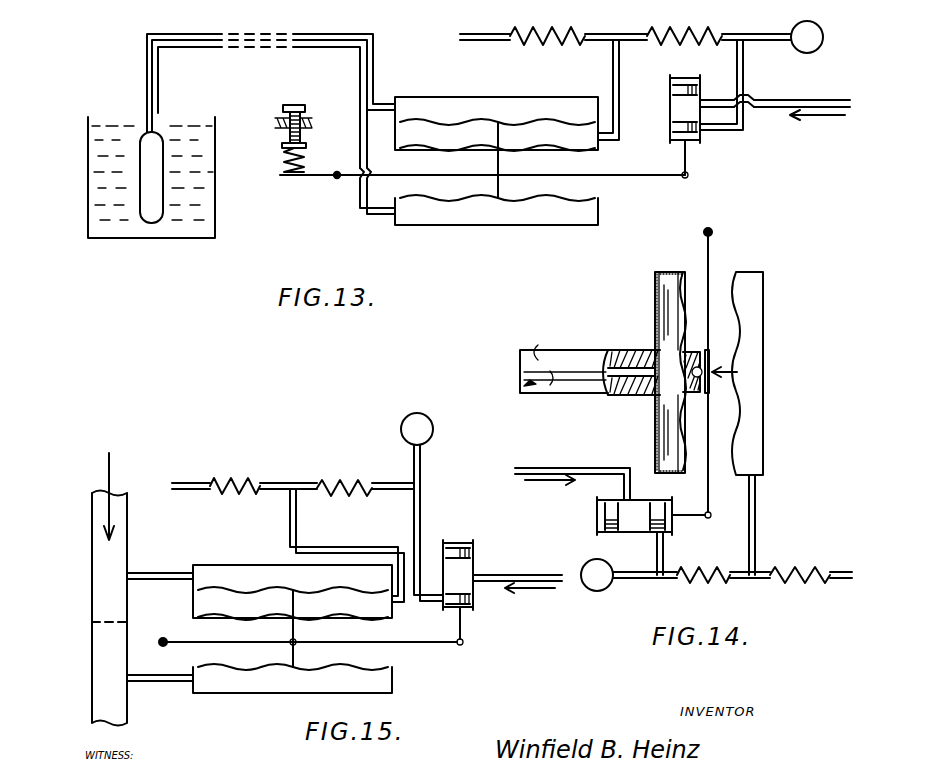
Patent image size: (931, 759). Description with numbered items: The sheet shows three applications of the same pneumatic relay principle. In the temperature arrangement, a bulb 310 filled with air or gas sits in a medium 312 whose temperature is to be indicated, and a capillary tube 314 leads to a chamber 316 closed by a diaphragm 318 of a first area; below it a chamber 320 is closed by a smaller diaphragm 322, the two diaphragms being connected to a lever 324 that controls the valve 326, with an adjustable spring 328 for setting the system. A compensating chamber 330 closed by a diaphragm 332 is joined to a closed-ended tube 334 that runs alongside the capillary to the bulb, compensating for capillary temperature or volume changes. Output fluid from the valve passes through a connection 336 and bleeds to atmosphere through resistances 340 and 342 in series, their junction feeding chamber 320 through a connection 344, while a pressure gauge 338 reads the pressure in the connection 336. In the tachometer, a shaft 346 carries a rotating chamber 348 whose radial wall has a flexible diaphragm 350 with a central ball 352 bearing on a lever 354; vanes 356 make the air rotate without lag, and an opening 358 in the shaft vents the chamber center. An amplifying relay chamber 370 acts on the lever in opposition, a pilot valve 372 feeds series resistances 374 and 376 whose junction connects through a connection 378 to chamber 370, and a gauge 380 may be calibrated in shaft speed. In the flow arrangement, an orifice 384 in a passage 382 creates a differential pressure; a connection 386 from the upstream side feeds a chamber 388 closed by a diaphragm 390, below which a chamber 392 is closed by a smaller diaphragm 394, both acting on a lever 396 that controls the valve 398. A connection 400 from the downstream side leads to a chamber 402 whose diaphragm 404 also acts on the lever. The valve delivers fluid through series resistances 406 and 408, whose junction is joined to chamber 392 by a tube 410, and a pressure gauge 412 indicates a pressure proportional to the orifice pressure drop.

In FIG. 13, the bulb 310 is at (150, 218).
In FIG. 13, the medium 312 is at (215, 181).
In FIG. 13, the capillary tube 314 is at (333, 27).
In FIG. 13, the chamber 316 is at (428, 93).
In FIG. 13, the diaphragm 318 is at (560, 126).
In FIG. 13, the chamber 320 is at (415, 149).
In FIG. 13, the diaphragm 322 is at (543, 149).
In FIG. 13, the lever 324 is at (612, 167).
In FIG. 13, the valve 326 is at (661, 124).
In FIG. 13, the spring 328 is at (282, 158).
In FIG. 13, the compensating chamber 330 is at (412, 228).
In FIG. 13, the diaphragm 332 is at (555, 197).
In FIG. 13, the tube 334 is at (355, 195).
In FIG. 13, the connection 336 is at (744, 68).
In FIG. 13, the pressure gauge 338 is at (812, 21).
In FIG. 13, the resistance 340 is at (680, 27).
In FIG. 13, the resistance 342 is at (548, 27).
In FIG. 13, the connection 344 is at (620, 72).
In FIG. 14, the shaft 346 is at (575, 351).
In FIG. 14, the chamber 348 is at (670, 272).
In FIG. 14, the diaphragm 350 is at (684, 408).
In FIG. 14, the ball 352 is at (697, 362).
In FIG. 14, the lever 354 is at (707, 488).
In FIG. 14, the vanes 356 is at (665, 302).
In FIG. 14, the opening 358 is at (635, 395).
In FIG. 14, the chamber 370 is at (750, 272).
In FIG. 14, the pilot valve 372 is at (588, 520).
In FIG. 14, the resistance 374 is at (706, 556).
In FIG. 14, the resistance 376 is at (795, 567).
In FIG. 14, the connection 378 is at (756, 525).
In FIG. 14, the gauge 380 is at (608, 588).
In FIG. 15, the passage 382 is at (128, 546).
In FIG. 15, the orifice 384 is at (112, 621).
In FIG. 15, the connection 386 is at (145, 579).
In FIG. 15, the chamber 388 is at (214, 572).
In FIG. 15, the diaphragm 390 is at (336, 592).
In FIG. 15, the chamber 392 is at (208, 617).
In FIG. 15, the diaphragm 394 is at (340, 620).
In FIG. 15, the lever 396 is at (413, 641).
In FIG. 15, the valve 398 is at (459, 538).
In FIG. 15, the connection 400 is at (146, 681).
In FIG. 15, the chamber 402 is at (212, 697).
In FIG. 15, the diaphragm 404 is at (336, 675).
In FIG. 15, the resistance 406 is at (342, 480).
In FIG. 15, the resistance 408 is at (243, 466).
In FIG. 15, the tube 410 is at (348, 542).
In FIG. 15, the pressure gauge 412 is at (400, 429).